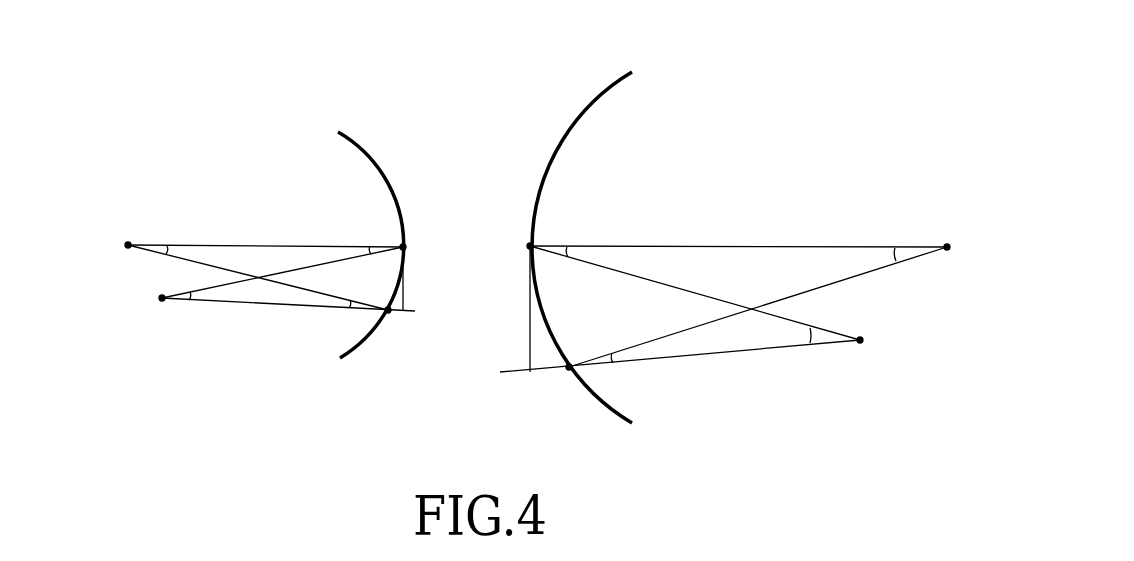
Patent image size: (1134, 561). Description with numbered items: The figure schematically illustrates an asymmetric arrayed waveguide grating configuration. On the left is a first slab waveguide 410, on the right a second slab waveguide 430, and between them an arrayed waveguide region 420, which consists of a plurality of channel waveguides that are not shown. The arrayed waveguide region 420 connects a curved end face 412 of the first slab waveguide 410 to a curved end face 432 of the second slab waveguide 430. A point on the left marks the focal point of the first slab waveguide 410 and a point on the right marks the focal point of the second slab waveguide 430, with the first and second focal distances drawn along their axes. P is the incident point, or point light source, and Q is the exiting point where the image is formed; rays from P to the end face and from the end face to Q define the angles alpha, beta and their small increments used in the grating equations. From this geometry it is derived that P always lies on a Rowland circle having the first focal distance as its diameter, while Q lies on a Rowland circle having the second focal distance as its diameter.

The first slab waveguide 410 is at (267, 246).
The first grating (curved facet of slab 1) 412 is at (348, 131).
The arrayed waveguide region 420 is at (530, 164).
The second slab waveguide 430 is at (735, 277).
The end face of the second slab waveguide 432 is at (601, 88).